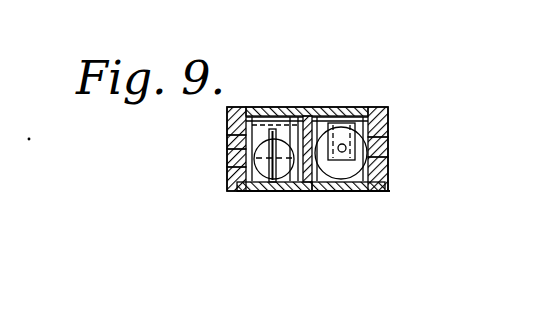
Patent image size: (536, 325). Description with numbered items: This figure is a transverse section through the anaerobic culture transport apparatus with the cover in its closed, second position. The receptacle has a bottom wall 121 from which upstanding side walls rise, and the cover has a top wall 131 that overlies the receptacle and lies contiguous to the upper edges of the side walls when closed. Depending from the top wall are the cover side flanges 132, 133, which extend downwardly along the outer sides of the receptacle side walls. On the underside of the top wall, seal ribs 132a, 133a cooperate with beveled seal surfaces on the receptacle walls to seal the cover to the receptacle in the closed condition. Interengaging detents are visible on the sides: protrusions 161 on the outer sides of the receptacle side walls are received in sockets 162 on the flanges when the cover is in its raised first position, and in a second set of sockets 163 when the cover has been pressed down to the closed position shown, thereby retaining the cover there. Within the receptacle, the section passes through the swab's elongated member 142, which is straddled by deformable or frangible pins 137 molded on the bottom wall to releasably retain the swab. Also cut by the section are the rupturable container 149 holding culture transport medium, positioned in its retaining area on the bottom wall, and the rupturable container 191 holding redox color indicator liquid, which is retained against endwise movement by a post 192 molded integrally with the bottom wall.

The seal rib 133a is at (247, 108).
The top wall 131 is at (317, 107).
The rupturable container 149 is at (356, 107).
The seal rib 132a is at (373, 107).
The side flange 132 is at (388, 117).
The elongated member 142 is at (388, 164).
The frangible pin 137 is at (386, 188).
The second set of sockets 163 is at (232, 135).
The protrusion 161 is at (232, 140).
The side flange 133 is at (232, 155).
The socket 162 is at (230, 168).
The post 192 is at (258, 188).
The rupturable container 191 is at (295, 187).
The bottom wall 121 is at (323, 192).